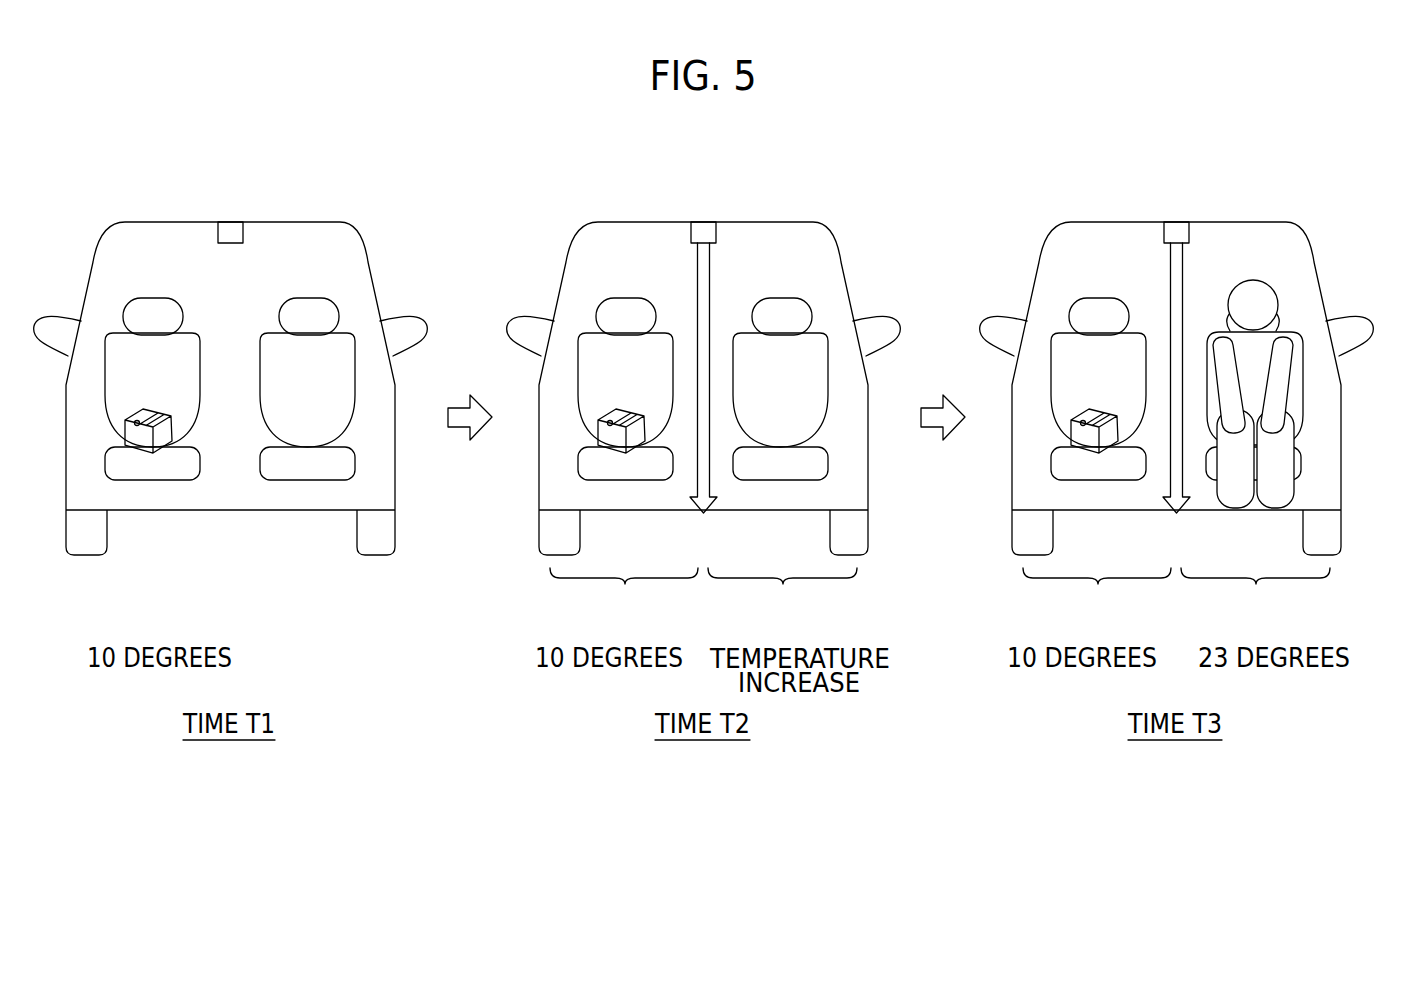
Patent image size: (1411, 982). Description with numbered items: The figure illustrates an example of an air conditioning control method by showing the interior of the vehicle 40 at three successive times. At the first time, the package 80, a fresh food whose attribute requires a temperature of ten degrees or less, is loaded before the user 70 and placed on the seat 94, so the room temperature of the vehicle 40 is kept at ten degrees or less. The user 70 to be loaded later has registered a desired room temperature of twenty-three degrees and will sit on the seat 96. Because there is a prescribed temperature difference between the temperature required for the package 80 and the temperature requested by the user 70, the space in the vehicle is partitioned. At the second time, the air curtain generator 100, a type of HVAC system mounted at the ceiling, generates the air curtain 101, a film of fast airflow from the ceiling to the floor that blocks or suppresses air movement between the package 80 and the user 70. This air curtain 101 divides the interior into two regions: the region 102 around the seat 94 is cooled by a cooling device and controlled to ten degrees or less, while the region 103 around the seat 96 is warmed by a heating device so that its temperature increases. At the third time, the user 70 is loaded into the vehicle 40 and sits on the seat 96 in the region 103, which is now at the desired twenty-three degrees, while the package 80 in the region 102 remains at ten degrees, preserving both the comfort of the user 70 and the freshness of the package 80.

The vehicle 40 is at (287, 222).
The user 70 is at (1280, 285).
The package 80 is at (124, 434).
The seat 94 is at (118, 317).
The seat 96 is at (360, 381).
The air curtain generator 100 is at (217, 231).
The air curtain 101 is at (697, 275).
The region 102 is at (860, 593).
The region 103 is at (1019, 592).